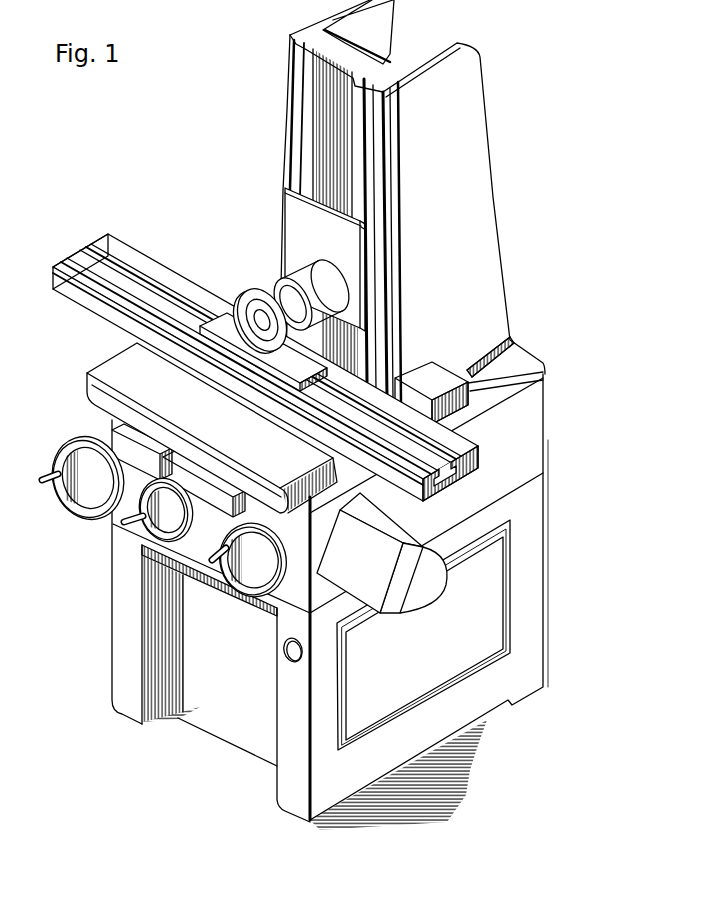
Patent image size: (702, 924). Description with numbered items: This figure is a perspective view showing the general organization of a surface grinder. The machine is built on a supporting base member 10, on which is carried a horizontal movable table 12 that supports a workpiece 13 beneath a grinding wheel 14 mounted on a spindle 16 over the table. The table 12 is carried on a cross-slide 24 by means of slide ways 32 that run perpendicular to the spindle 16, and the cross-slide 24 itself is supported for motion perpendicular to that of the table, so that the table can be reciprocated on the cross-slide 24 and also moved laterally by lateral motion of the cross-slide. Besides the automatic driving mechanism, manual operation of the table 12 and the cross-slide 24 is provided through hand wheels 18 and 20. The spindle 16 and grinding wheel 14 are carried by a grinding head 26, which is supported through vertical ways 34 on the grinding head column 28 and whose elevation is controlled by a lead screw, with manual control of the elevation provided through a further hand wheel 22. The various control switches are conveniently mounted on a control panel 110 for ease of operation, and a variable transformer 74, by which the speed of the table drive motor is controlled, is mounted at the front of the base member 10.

The supporting base member 10 is at (533, 547).
The horizontal movable table 12 is at (103, 251).
The workpiece 13 is at (207, 320).
The grinding wheel 14 is at (253, 296).
The spindle 16 is at (290, 276).
The hand wheel 18 is at (92, 500).
The hand wheel 20 is at (168, 515).
The hand wheel 22 is at (265, 578).
The cross-slide 24 is at (227, 424).
The grinding head 26 is at (332, 249).
The grinding head column 28 is at (459, 272).
The slide ways 32 is at (434, 494).
The vertical ways 34 is at (302, 103).
The variable transformer 74 is at (293, 663).
The control panel 110 is at (378, 574).